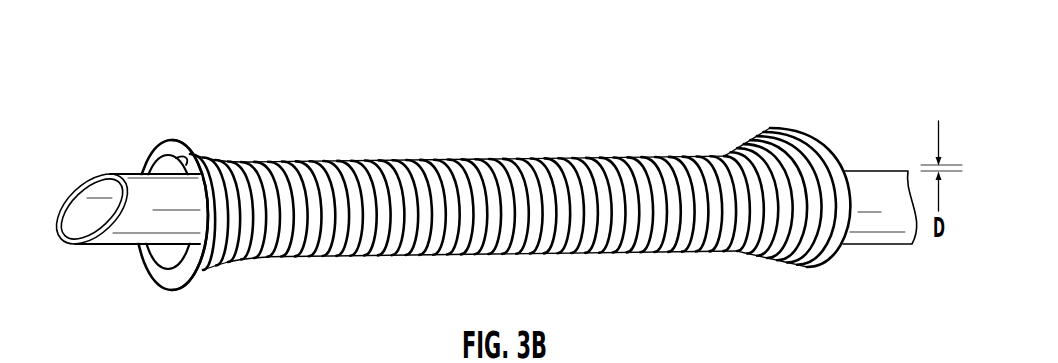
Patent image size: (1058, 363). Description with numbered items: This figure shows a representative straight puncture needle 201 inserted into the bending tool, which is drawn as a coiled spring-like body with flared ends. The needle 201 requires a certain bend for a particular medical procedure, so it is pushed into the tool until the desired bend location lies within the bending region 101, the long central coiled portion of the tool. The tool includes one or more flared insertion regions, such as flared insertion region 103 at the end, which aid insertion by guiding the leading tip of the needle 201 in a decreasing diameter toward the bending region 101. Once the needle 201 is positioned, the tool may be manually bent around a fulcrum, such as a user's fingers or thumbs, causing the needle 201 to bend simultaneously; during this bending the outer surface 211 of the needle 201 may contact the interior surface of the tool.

The bending region 101 is at (463, 158).
The flared insertion region 103 is at (763, 148).
The puncture needle 201 is at (80, 190).
The outer surface 211 is at (123, 245).